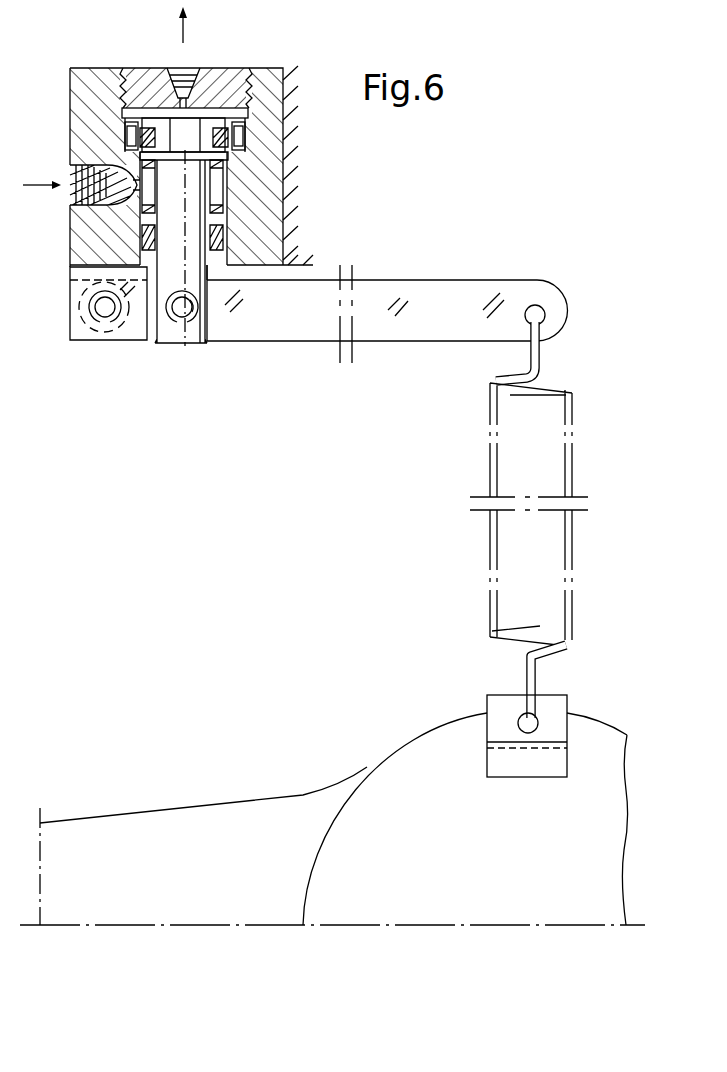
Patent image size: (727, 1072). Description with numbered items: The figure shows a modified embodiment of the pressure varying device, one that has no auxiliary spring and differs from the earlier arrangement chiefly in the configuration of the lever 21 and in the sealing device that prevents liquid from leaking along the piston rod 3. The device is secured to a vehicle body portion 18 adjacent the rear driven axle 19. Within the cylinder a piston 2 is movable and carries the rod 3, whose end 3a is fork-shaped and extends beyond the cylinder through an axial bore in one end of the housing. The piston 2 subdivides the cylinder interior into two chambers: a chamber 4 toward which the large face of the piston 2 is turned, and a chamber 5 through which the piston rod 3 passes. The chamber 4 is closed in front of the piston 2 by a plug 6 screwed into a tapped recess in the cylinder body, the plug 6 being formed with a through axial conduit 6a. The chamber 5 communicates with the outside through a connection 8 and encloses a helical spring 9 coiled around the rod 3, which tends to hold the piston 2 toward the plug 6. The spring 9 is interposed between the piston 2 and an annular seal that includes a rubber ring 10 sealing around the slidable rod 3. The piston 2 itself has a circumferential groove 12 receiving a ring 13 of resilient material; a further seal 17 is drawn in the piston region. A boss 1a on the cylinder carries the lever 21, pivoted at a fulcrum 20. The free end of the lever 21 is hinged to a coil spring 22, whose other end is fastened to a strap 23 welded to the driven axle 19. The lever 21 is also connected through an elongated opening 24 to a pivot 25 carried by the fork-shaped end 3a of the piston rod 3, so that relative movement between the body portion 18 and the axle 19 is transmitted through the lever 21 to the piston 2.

The boss 1a is at (76, 306).
The piston 2 is at (122, 82).
The rod 3 is at (160, 259).
The end of the rod 3a is at (186, 326).
The chamber 4 is at (240, 115).
The chamber 5 is at (225, 178).
The plug 6 is at (225, 84).
The through axial conduit 6a is at (179, 95).
The connection 8 is at (100, 196).
The helical spring 9 is at (225, 215).
The rubber ring 10 is at (228, 262).
The circumferential groove 12 is at (150, 130).
The ring of resilient material 13 is at (243, 140).
The sealing ring 17 is at (125, 138).
The vehicle body portion 18 is at (285, 101).
The rear driven axle 19 is at (182, 821).
The fulcrum 20 is at (102, 318).
The lever 21 is at (403, 337).
The coil spring 22 is at (492, 540).
The strap 23 is at (494, 758).
The elongated opening 24 is at (202, 314).
The pivot 25 is at (176, 320).